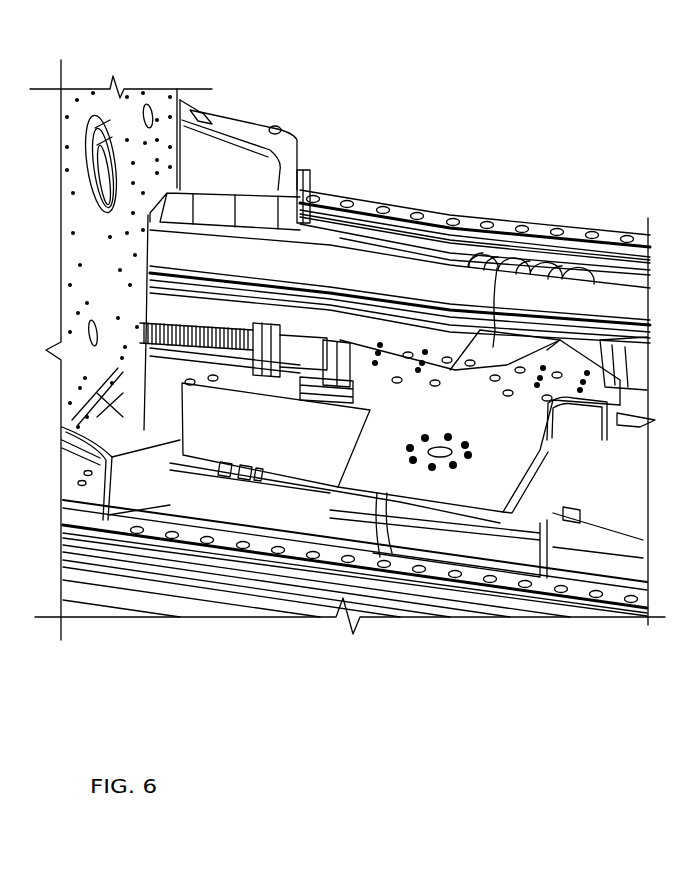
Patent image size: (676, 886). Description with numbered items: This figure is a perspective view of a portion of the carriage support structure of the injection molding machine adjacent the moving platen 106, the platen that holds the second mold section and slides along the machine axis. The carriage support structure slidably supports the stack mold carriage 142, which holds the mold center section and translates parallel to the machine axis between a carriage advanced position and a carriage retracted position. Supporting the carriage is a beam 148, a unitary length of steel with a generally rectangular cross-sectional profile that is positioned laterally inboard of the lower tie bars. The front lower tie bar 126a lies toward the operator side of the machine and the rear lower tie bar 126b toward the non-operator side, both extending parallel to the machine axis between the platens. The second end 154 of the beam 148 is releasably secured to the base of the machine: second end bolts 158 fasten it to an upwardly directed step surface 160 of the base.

The moving platen 106 is at (83, 117).
The second end bolts 158 is at (213, 378).
The beam 148 is at (237, 383).
The rear lower tie bar 126b is at (350, 262).
The stack mold carriage 142 is at (387, 477).
The step surface 160 is at (178, 457).
The second end 154 is at (180, 425).
The front lower tie bar 126a is at (257, 505).